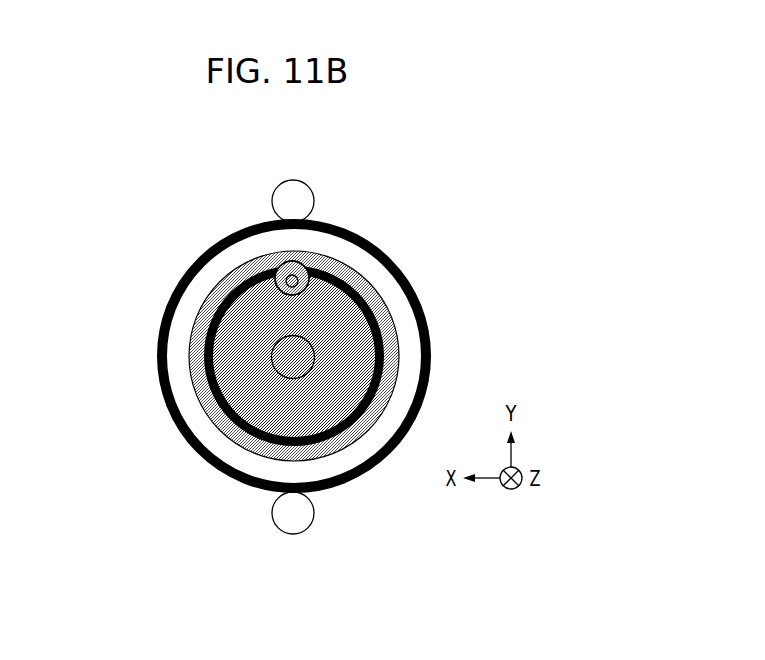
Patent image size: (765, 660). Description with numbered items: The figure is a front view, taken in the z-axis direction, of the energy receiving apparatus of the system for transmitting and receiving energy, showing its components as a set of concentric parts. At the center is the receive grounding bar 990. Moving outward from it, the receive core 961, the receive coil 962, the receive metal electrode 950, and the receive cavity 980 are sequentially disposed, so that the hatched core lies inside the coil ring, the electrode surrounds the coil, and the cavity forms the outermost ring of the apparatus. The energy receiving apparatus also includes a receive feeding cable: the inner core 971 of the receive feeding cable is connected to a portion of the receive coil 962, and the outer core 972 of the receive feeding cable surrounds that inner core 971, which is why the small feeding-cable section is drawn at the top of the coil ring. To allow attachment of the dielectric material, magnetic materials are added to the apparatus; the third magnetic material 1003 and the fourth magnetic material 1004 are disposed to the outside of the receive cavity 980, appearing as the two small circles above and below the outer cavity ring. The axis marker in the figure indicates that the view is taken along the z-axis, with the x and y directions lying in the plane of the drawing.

The receive metal electrode 950 is at (233, 270).
The receive core 961 is at (244, 398).
The receive coil 962 is at (205, 338).
The inner core of the receive feeding cable 971 is at (278, 270).
The outer core of the receive feeding cable 972 is at (296, 275).
The receive cavity 980 is at (418, 300).
The receive grounding bar 990 is at (297, 378).
The third magnetic material 1003 is at (293, 180).
The fourth magnetic material 1004 is at (293, 534).